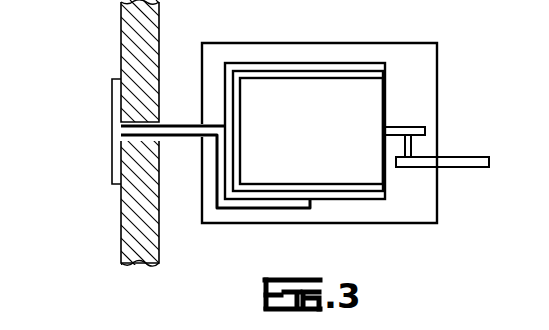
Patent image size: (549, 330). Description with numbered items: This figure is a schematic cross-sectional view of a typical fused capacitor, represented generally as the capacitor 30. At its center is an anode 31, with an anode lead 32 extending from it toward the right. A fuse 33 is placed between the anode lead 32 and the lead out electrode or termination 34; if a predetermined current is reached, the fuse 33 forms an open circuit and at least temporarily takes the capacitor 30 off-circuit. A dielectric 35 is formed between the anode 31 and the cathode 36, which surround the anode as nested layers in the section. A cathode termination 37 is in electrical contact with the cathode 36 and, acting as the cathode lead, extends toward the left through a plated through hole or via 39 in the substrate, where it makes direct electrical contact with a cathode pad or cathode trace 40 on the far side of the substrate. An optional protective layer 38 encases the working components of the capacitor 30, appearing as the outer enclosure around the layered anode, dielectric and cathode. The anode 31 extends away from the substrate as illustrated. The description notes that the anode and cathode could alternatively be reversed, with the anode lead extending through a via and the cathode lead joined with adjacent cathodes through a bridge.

The capacitor 30 is at (423, 244).
The anode 31 is at (321, 136).
The anode lead 32 is at (408, 127).
The fuse 33 is at (413, 152).
The lead out electrode or termination 34 is at (482, 168).
The dielectric 35 is at (331, 70).
The cathode 36 is at (287, 62).
The cathode termination 37 is at (130, 143).
The protective layer 38 is at (137, 29).
The plated through hole or via 39 is at (133, 142).
The cathode pad or cathode trace 40 is at (110, 110).